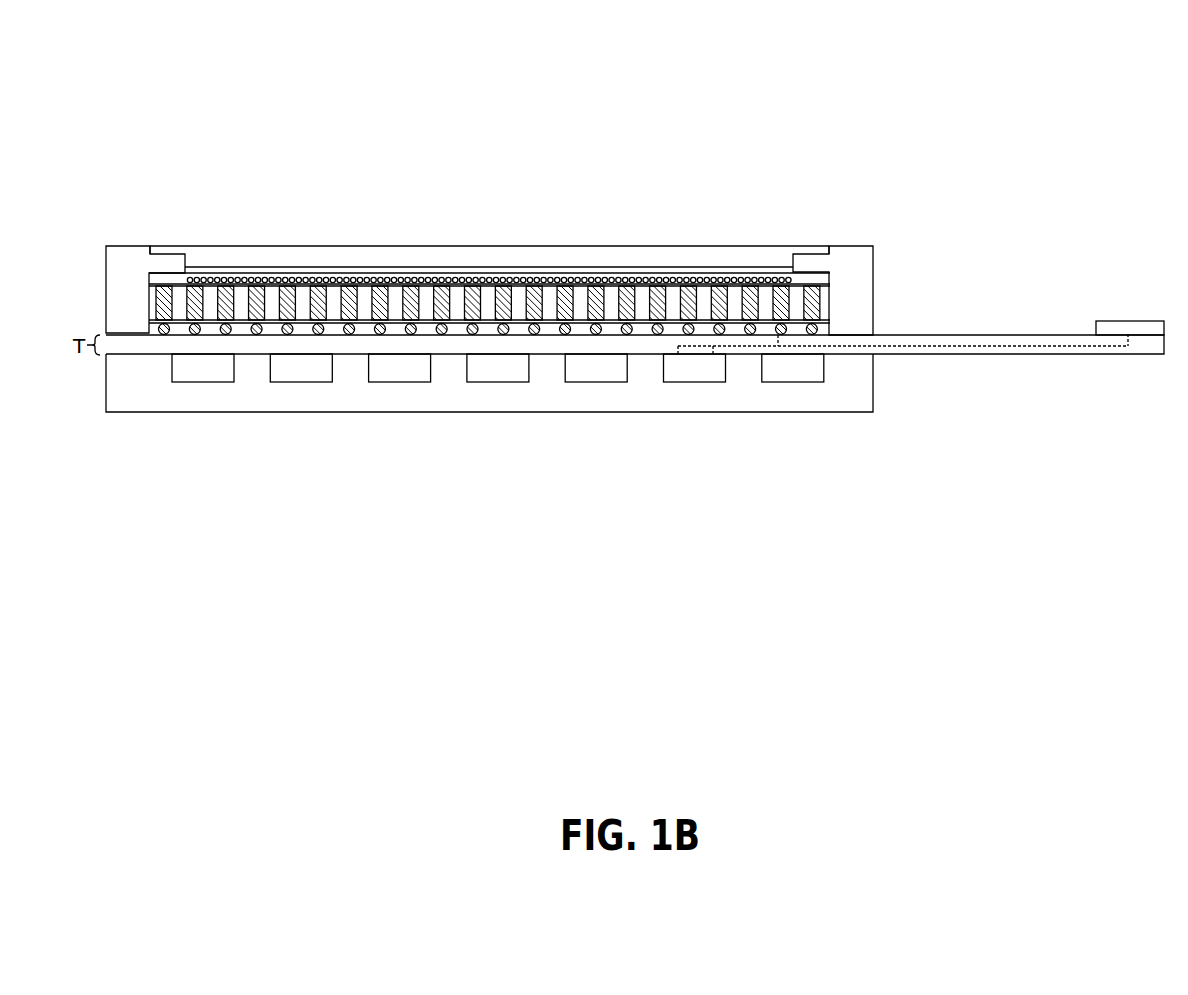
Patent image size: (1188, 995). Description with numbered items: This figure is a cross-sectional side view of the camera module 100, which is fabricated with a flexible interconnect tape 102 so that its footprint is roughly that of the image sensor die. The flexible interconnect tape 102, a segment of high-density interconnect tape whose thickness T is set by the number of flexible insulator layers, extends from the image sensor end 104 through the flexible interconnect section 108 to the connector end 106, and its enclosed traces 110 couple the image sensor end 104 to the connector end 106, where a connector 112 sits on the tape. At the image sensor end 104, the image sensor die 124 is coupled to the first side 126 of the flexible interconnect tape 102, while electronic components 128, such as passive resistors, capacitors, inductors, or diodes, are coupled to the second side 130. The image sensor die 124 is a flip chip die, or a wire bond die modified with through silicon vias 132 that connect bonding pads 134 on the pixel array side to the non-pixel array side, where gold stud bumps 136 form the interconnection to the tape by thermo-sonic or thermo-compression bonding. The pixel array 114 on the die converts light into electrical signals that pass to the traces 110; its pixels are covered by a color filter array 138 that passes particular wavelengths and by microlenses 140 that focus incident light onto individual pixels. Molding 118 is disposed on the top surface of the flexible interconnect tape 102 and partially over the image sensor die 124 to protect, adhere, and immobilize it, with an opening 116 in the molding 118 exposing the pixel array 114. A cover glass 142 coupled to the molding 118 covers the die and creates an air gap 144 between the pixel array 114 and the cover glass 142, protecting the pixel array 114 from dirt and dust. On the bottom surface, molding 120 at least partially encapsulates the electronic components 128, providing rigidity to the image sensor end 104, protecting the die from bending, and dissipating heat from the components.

The camera module 100 is at (935, 68).
The flexible interconnect tape 102 is at (1143, 354).
The image sensor end 104 is at (520, 528).
The connector end 106 is at (1143, 528).
The flexible interconnect section 108 is at (976, 528).
The traces 110 is at (1057, 345).
The connector 112 is at (1116, 326).
The pixel array 114 is at (645, 267).
The opening 116 is at (725, 226).
The molding 118 is at (124, 266).
The molding 120 is at (848, 392).
The image sensor die 124 is at (825, 318).
The first side 126 is at (1013, 320).
The electronic components 128 is at (702, 373).
The second side 130 is at (968, 368).
The through silicon vias 132 is at (820, 303).
The bonding pads 134 is at (823, 281).
The gold stud bumps 136 is at (657, 334).
The color filter array 138 is at (548, 282).
The microlenses 140 is at (497, 278).
The cover glass 142 is at (353, 260).
The air gap 144 is at (428, 273).